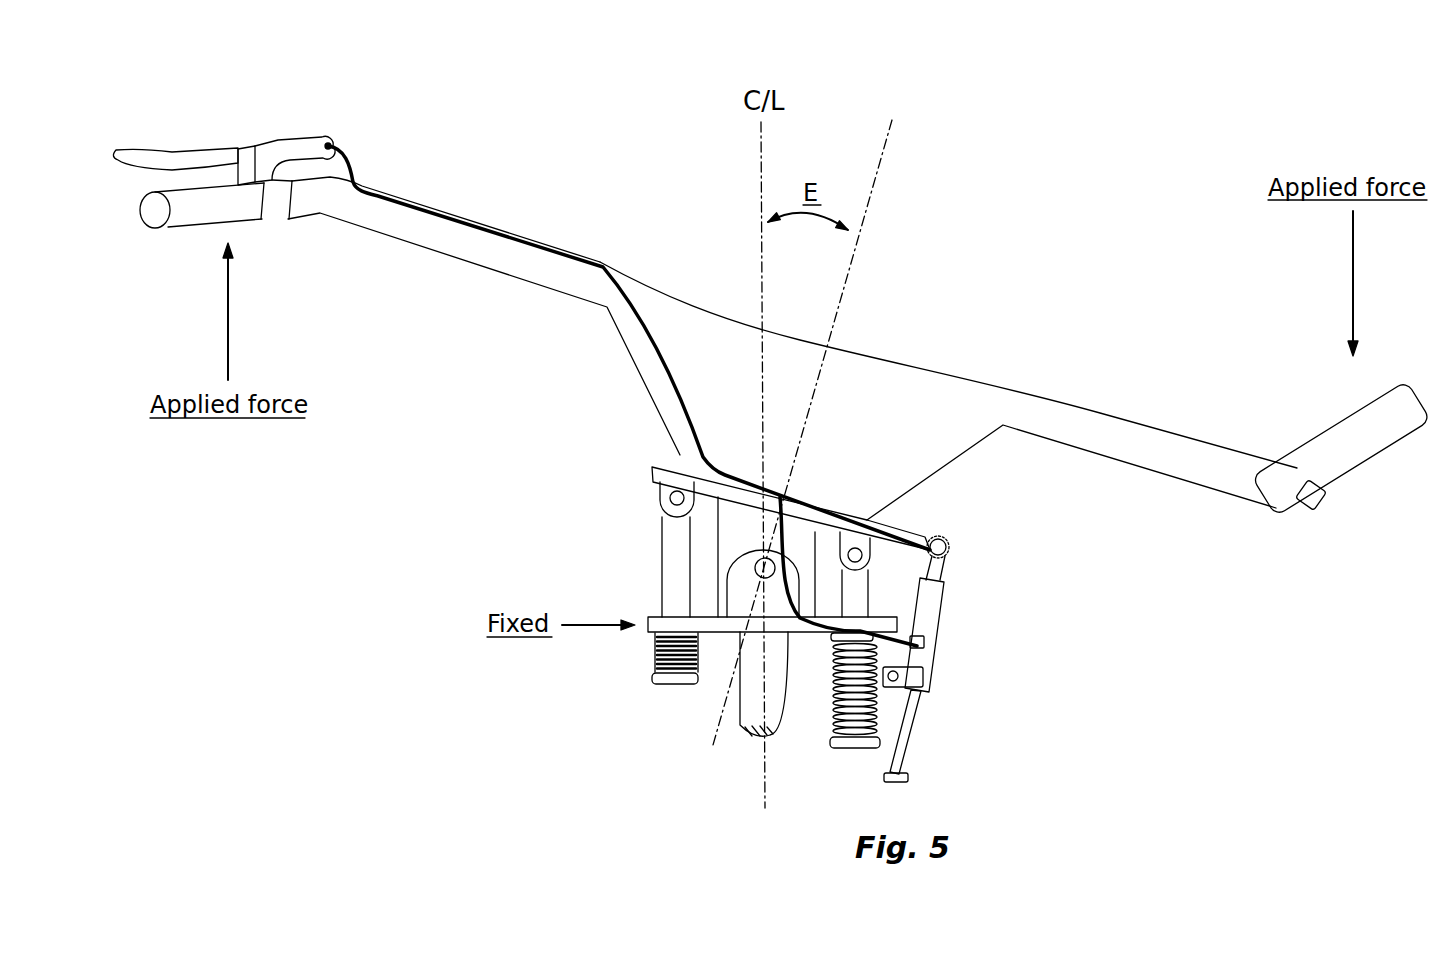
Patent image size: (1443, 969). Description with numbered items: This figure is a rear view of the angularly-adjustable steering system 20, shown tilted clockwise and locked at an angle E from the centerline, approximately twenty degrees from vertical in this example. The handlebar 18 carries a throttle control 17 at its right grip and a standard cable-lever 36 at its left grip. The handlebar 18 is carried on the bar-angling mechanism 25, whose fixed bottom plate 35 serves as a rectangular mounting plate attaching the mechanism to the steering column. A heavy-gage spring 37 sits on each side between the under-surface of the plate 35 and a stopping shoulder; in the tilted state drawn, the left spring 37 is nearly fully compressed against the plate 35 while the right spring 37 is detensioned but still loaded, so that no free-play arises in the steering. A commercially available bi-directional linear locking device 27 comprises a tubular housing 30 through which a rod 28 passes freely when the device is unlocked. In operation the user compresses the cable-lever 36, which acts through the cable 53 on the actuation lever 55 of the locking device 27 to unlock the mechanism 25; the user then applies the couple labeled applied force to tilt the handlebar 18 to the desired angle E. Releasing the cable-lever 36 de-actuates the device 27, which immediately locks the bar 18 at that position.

The throttle control 17 is at (1423, 548).
The handlebar 18 is at (983, 377).
The handlebar apparatus 20 is at (990, 178).
The bar-angling mechanism 25 is at (548, 522).
The locking device 27 is at (956, 662).
The rod 28 is at (919, 760).
The tubular housing 30 is at (943, 603).
The bottom plate 35 is at (718, 633).
The cable-lever 36 is at (268, 140).
The spring 37 is at (650, 652).
The cable 53 is at (441, 212).
The actuation lever 55 is at (925, 668).